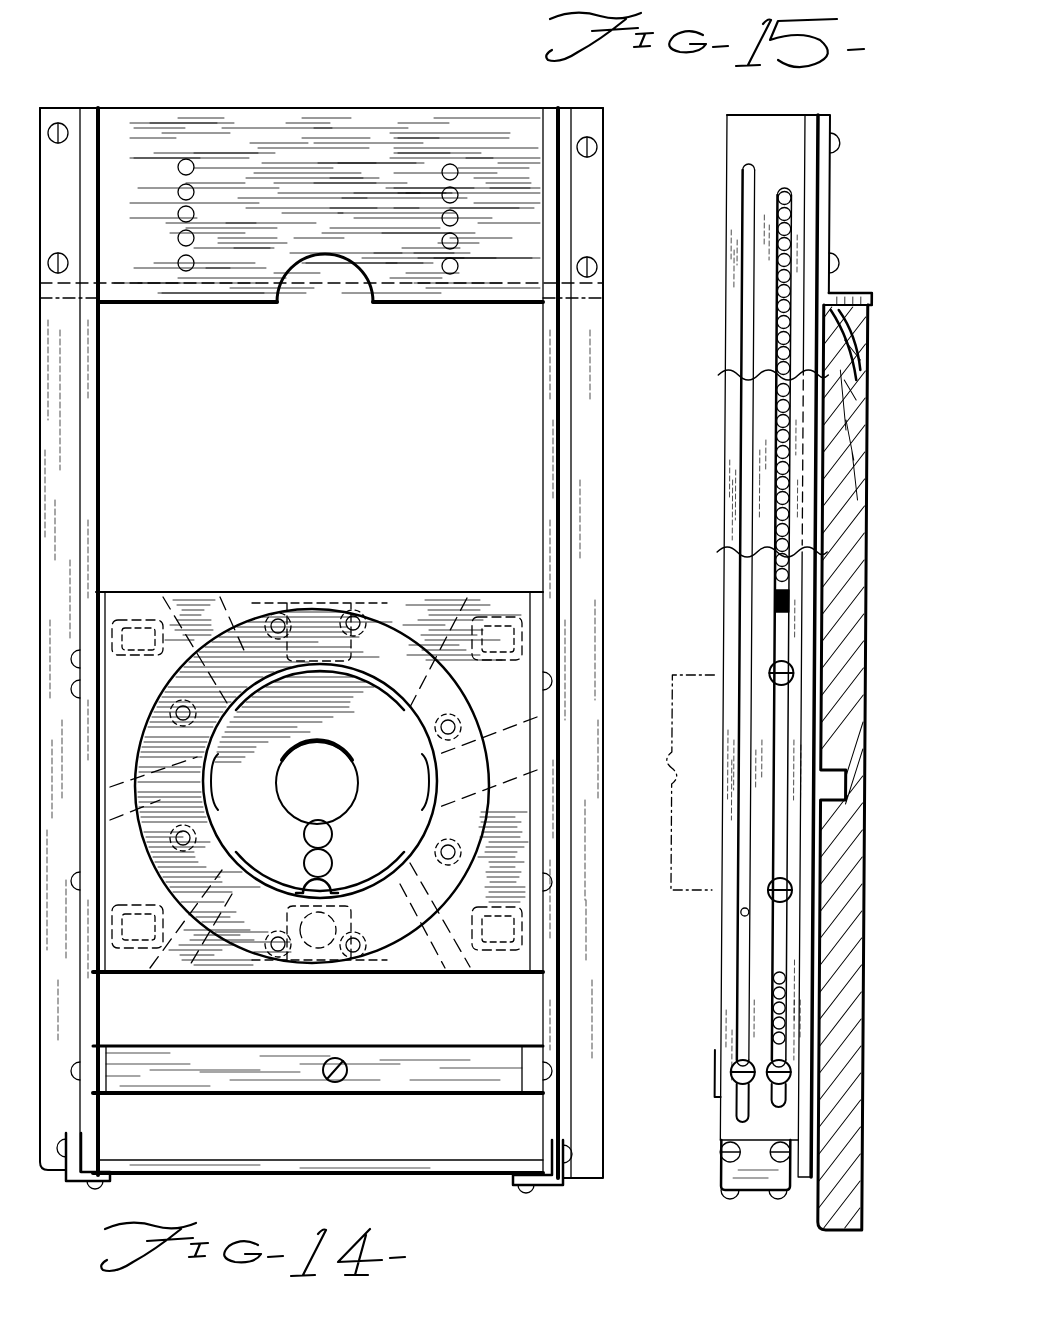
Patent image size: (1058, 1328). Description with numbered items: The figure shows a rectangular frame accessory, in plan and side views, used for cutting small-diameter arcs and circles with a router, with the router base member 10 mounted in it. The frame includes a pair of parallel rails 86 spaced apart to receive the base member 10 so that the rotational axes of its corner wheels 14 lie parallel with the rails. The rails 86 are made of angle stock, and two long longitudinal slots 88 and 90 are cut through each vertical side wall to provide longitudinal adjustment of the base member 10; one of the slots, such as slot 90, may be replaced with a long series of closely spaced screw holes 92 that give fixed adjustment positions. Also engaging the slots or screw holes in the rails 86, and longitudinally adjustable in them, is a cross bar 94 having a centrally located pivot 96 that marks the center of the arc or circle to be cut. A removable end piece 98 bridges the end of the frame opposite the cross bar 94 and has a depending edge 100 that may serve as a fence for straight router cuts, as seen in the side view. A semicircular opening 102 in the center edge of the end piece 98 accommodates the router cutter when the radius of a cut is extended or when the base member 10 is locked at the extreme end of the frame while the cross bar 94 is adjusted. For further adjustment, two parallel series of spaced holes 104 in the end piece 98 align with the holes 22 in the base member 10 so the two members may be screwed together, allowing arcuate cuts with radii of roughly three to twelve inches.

In FIG. 14, the router base member 10 is at (240, 592).
In FIG. 14, the corner wheels 14 is at (184, 624).
In FIG. 14, the smaller holes 22 is at (172, 716).
In FIG. 14, the parallel rails 86 is at (104, 448).
In FIG. 15, the longitudinal slot 88 is at (748, 214).
In FIG. 15, the longitudinal slot 90 is at (779, 254).
In FIG. 15, the screw holes 92 is at (778, 392).
In FIG. 14, the cross bar 94 is at (242, 1064).
In FIG. 14, the pivot 96 is at (366, 1025).
In FIG. 14, the removable end piece 98 is at (316, 110).
In FIG. 14, the depending edge 100 is at (220, 304).
In FIG. 15, the depending edge 100 is at (874, 302).
In FIG. 14, the semicircular opening 102 is at (358, 284).
In FIG. 14, the spaced holes 104 is at (192, 160).